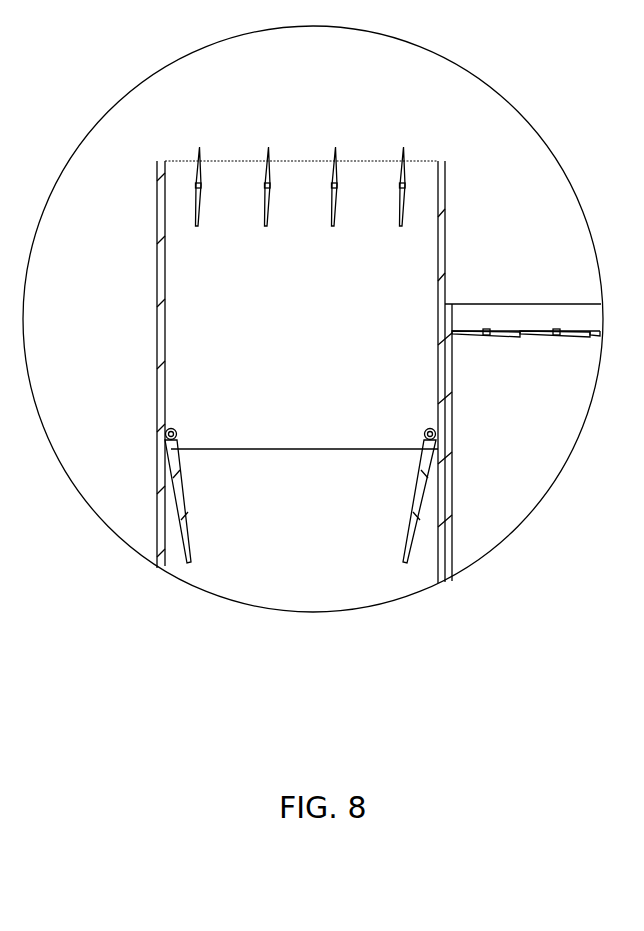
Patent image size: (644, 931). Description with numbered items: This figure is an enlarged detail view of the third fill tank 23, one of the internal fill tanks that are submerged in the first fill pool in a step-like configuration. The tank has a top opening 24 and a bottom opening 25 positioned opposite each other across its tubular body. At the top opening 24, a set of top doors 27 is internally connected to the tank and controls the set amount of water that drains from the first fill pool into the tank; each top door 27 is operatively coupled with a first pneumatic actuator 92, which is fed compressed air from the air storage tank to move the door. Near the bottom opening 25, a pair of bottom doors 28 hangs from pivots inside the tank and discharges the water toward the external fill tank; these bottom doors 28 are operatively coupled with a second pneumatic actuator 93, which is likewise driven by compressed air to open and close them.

The third fill tank 23 is at (288, 94).
The top opening 24 is at (349, 163).
The bottom opening 25 is at (280, 454).
The top door 27 is at (196, 228).
The pair of bottom doors 28 is at (191, 553).
The first pneumatic actuator 92 is at (201, 186).
The second pneumatic actuator 93 is at (176, 434).